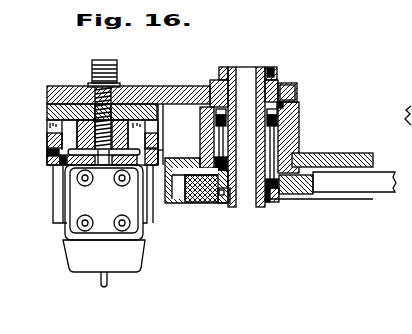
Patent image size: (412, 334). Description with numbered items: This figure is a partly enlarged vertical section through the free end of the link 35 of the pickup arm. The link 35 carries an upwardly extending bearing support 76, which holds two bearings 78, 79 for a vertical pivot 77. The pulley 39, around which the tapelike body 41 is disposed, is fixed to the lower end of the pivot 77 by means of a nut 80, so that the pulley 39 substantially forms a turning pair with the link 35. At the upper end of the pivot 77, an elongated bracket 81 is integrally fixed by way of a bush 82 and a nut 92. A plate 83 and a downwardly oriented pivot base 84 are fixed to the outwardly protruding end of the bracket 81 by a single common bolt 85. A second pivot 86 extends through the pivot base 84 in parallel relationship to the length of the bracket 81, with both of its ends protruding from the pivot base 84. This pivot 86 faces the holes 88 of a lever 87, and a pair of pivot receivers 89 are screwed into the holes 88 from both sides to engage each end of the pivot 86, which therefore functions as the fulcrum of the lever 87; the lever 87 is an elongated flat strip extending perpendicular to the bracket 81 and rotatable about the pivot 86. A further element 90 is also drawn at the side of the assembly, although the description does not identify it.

The link 35 is at (343, 156).
The pulley 39 is at (207, 190).
The tapelike body 41 is at (385, 173).
The bearing support 76 is at (294, 128).
The pivot 77 is at (249, 72).
The bearing 78 is at (215, 117).
The bearing 79 is at (207, 158).
The nut 80 is at (272, 203).
The bracket 81 is at (185, 93).
The bush 82 is at (277, 84).
The plate 83 is at (52, 112).
The pivot base 84 is at (118, 127).
The bolt 85 is at (95, 106).
The pivot 86 is at (103, 166).
The lever 87 is at (50, 140).
The holes 88 is at (62, 168).
The pivot receivers 89 is at (50, 154).
The side wall 90 is at (160, 152).
The nut 92 is at (270, 68).